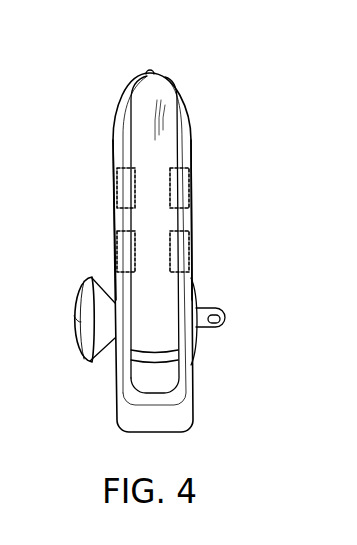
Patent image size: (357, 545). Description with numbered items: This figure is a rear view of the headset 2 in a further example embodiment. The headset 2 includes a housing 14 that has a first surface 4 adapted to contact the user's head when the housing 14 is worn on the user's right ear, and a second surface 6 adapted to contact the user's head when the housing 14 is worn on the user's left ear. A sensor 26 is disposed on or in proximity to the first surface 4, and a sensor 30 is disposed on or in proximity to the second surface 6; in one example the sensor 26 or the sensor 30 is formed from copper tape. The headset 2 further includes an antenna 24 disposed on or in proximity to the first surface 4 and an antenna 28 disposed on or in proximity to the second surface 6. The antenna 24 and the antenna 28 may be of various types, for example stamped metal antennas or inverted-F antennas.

The headset 2 is at (135, 42).
The first surface 4 is at (113, 130).
The second surface 6 is at (192, 124).
The housing 14 is at (157, 95).
The antenna 24 is at (117, 183).
The sensor 26 is at (117, 250).
The antenna 28 is at (191, 183).
The sensor 30 is at (191, 250).